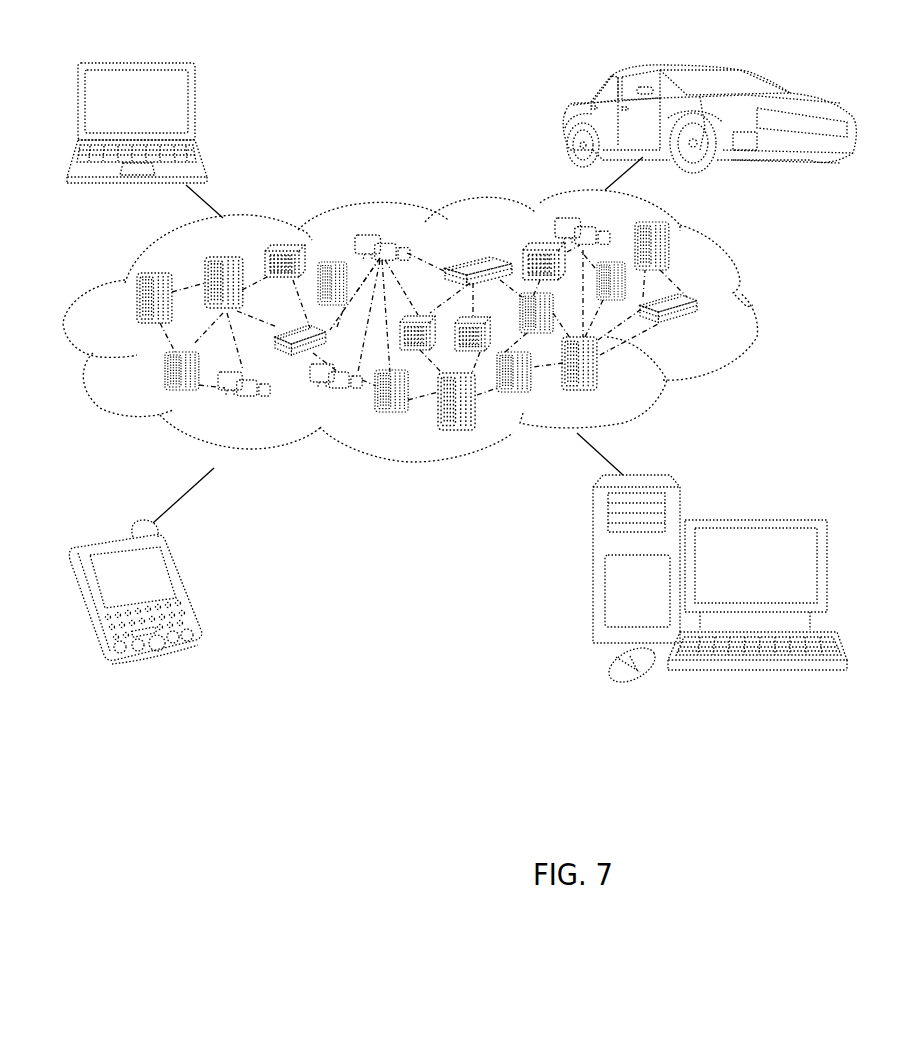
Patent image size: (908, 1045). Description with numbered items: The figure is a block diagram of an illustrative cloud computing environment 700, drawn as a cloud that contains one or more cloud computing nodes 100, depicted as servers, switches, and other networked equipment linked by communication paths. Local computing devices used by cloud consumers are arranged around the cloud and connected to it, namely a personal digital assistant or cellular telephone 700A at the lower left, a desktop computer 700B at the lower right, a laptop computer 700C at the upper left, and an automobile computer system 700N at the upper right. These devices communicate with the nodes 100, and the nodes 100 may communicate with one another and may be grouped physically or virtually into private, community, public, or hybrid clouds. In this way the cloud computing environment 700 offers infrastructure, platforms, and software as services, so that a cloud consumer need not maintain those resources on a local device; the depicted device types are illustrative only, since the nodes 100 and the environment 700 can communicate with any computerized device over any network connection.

The cloud computing environment 700 is at (753, 307).
The cloud computing nodes 100 is at (717, 333).
The personal digital assistant (PDA) or cellular telephone 700A is at (187, 588).
The desktop computer 700B is at (753, 517).
The laptop computer 700C is at (195, 110).
The automobile computer system 700N is at (568, 120).